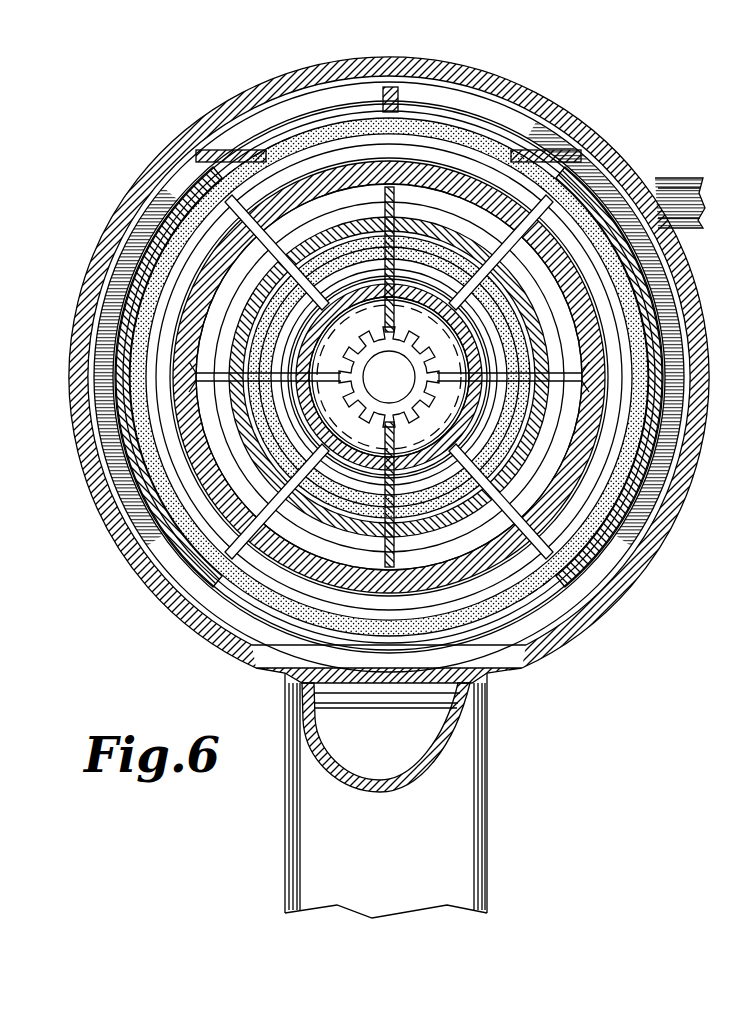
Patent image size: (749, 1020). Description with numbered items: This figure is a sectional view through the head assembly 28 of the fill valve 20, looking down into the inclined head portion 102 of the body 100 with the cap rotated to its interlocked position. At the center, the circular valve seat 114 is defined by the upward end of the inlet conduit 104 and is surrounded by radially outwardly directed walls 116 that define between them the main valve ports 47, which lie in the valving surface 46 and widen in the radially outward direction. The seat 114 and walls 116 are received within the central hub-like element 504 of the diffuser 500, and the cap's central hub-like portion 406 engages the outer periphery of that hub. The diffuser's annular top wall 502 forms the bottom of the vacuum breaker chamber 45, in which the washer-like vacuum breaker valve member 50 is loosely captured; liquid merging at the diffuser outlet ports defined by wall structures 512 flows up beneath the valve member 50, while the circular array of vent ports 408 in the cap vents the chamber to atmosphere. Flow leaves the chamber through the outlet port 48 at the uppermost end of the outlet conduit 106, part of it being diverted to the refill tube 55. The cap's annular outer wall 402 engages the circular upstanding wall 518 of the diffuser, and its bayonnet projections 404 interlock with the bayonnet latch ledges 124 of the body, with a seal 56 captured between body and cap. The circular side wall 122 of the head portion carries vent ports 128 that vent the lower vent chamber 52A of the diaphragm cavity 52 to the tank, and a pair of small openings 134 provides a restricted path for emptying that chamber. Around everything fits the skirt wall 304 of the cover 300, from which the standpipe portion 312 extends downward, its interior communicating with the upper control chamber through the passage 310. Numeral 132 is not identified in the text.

The cover 300 is at (240, 93).
The skirt wall 304 is at (257, 94).
The head assembly 28 is at (494, 70).
The lower vent chamber 52A is at (140, 290).
The ring 132 is at (120, 300).
The bayonnet latch ledges 124 is at (165, 205).
The diaphragm cavity 52 is at (120, 345).
The vent ports 128 is at (398, 68).
The outlet conduit 106 is at (376, 167).
The circular side wall 122 is at (105, 442).
The small openings 134 is at (195, 602).
The body 100 is at (120, 482).
The bayonnet projections 404 is at (290, 150).
The circular upstanding wall 518 is at (250, 655).
The diffuser 500 is at (240, 630).
The annular top wall 502 is at (284, 652).
The annular outer wall 402 is at (660, 450).
The head portion 102 is at (665, 430).
The vent ports 408 is at (470, 280).
The central hub-like portion 406 is at (440, 560).
The central hub-like element 504 is at (350, 290).
The circular valve seat 114 is at (310, 262).
The vacuum breaker chamber 45 is at (510, 310).
The vacuum breaker valve member 50 is at (520, 330).
The main valve ports 47 is at (290, 330).
The valving surface 46 is at (285, 300).
The walls 116 is at (418, 392).
The inlet conduit 104 is at (420, 352).
The outlet port 48 is at (430, 185).
The seal 56 is at (112, 378).
The wall structures 512 is at (250, 370).
The refill tube 55 is at (680, 183).
The standpipe portion 312 is at (488, 855).
The passage 310 is at (470, 738).
The fill valve 20 is at (240, 808).